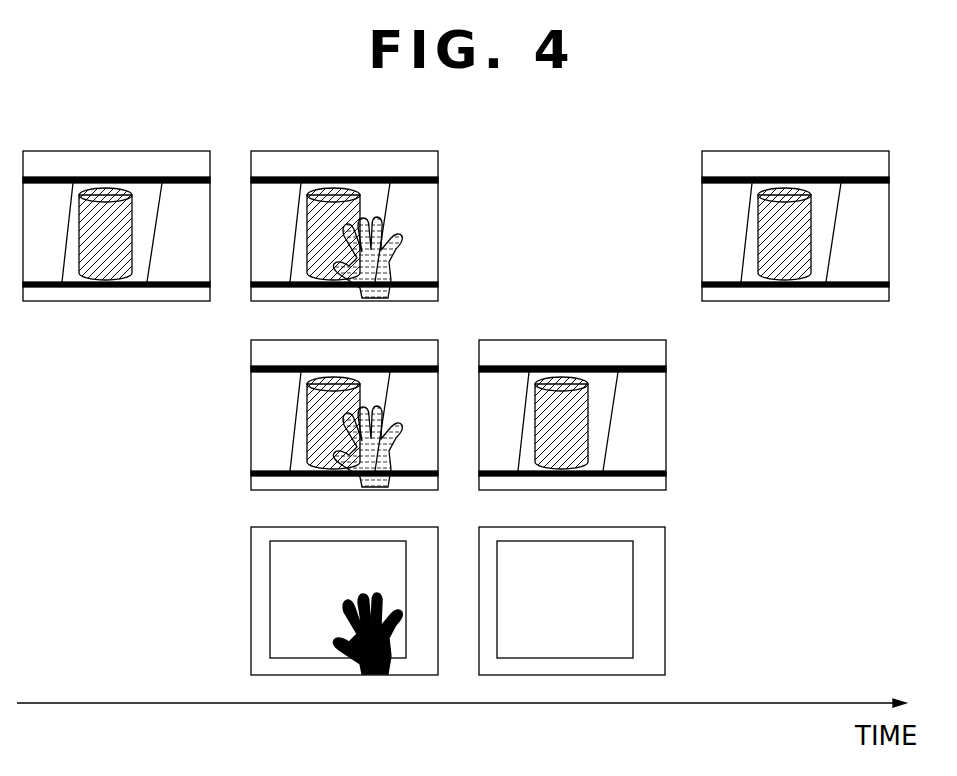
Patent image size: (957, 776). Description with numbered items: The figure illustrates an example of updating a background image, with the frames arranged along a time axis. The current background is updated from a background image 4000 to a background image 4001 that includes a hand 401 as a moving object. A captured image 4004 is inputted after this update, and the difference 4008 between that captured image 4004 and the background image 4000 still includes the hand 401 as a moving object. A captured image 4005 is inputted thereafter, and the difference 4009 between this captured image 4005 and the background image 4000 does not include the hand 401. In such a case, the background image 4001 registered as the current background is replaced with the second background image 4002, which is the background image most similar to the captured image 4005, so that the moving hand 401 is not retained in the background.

The background image 4000 is at (133, 151).
The background image 4001 is at (381, 210).
The second background image 4002 is at (809, 151).
The captured image 4004 is at (361, 340).
The captured image 4005 is at (581, 340).
The difference 4008 is at (361, 527).
The difference 4009 is at (583, 527).
The hand 401 is at (389, 262).